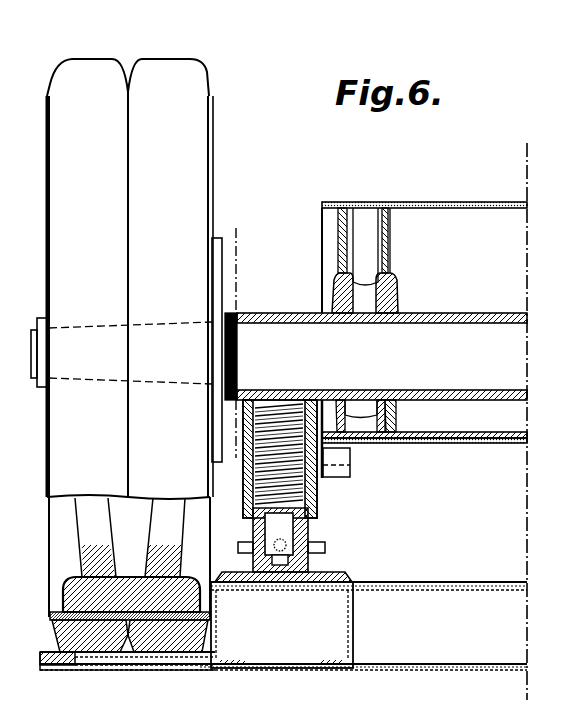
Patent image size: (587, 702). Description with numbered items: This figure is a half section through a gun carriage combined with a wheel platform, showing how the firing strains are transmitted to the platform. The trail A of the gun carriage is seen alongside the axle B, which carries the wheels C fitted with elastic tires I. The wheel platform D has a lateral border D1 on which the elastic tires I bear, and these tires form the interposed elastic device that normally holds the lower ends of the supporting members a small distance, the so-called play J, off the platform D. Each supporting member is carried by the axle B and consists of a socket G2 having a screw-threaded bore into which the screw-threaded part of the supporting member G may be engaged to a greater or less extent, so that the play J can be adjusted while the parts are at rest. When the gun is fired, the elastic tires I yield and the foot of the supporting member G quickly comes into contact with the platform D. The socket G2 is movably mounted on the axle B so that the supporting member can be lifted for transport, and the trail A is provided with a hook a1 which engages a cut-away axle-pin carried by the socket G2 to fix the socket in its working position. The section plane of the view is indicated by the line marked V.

The elastic tires I is at (79, 65).
The wheels C is at (60, 553).
The wheel platform D is at (452, 582).
The lateral border D1 is at (127, 664).
The plate V is at (224, 346).
The axle B is at (513, 357).
The trail A is at (375, 220).
The hook a1 is at (345, 470).
The socket G2 is at (308, 505).
The supporting member G is at (310, 532).
The play J is at (350, 580).